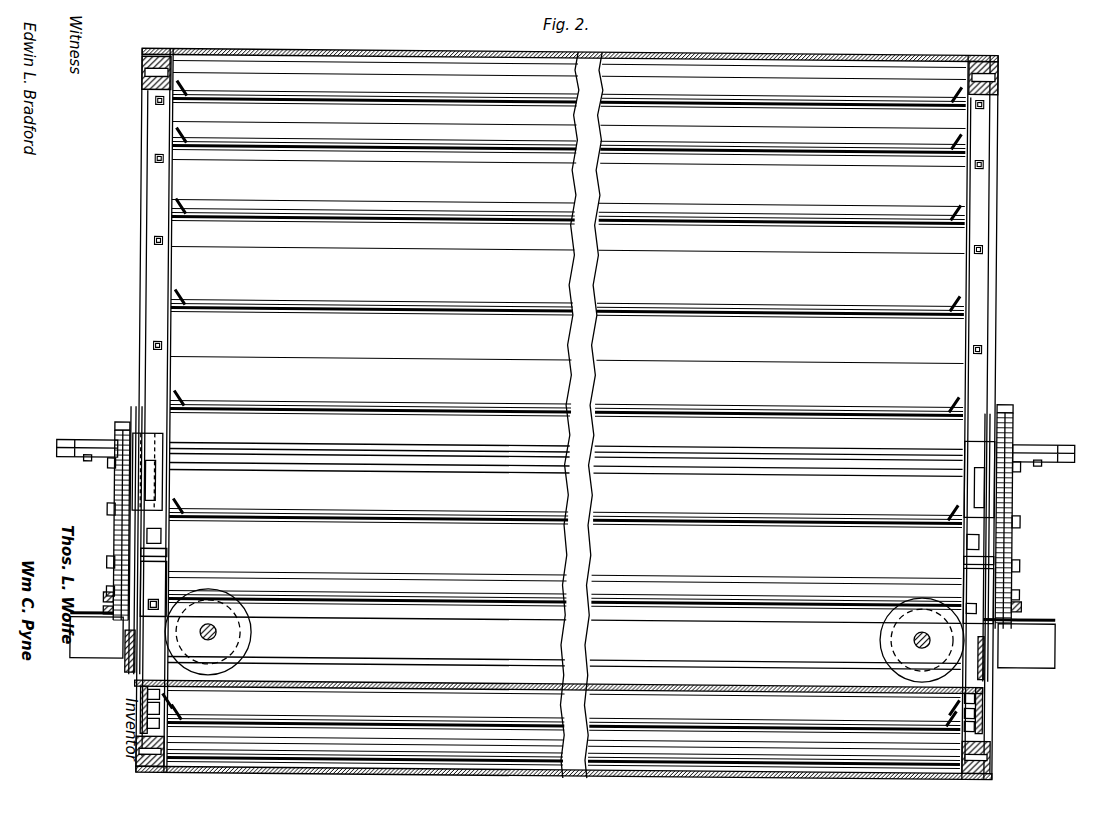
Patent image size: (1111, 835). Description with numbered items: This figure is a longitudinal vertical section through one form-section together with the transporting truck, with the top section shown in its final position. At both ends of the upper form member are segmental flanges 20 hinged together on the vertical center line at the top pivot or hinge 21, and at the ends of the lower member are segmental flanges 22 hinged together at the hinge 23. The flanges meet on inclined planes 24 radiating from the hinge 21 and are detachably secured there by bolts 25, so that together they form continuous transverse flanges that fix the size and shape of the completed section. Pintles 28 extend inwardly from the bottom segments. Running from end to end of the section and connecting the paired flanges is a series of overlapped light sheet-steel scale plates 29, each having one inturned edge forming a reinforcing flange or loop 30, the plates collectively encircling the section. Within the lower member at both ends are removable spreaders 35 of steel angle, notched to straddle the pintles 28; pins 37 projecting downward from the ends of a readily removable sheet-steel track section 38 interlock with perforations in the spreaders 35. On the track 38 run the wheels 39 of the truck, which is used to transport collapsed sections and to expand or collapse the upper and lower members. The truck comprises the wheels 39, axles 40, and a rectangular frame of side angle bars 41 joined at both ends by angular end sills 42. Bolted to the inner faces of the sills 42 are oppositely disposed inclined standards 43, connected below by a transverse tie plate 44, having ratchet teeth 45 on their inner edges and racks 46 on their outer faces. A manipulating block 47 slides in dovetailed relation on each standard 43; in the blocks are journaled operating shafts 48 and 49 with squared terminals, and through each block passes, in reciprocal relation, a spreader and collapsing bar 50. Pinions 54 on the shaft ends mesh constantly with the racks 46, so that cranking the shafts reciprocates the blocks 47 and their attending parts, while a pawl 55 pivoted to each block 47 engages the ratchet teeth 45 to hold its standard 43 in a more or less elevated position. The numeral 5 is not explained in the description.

The louver slat 5 is at (565, 500).
The segmental flange 20 is at (152, 293).
The top pivot or hinge 21 is at (139, 72).
The segmental flange 22 is at (168, 590).
The hinge 23 is at (170, 764).
The inclined plane 24 is at (168, 556).
The bolt 25 is at (162, 540).
The pintle 28 is at (168, 700).
The scale plate 29 is at (567, 419).
The reinforcing flange or loop 30 is at (530, 140).
The removable spreader 35 is at (143, 712).
The pin 37 is at (143, 698).
The track section 38 is at (340, 684).
The wheel 39 is at (245, 660).
The axle 40 is at (562, 640).
The side angle bar 41 is at (110, 660).
The angular end sill 42 is at (86, 617).
The inclined standard 43 is at (118, 644).
The transverse tie plate 44 is at (140, 660).
The ratchet teeth 45 is at (110, 565).
The rack 46 is at (113, 545).
The manipulating block 47 is at (160, 462).
The operating shaft 48 is at (88, 455).
The operating shaft 49 is at (90, 466).
The spreader and collapsing bar 50 is at (972, 494).
The pinion 54 is at (120, 426).
The pawl 55 is at (114, 514).